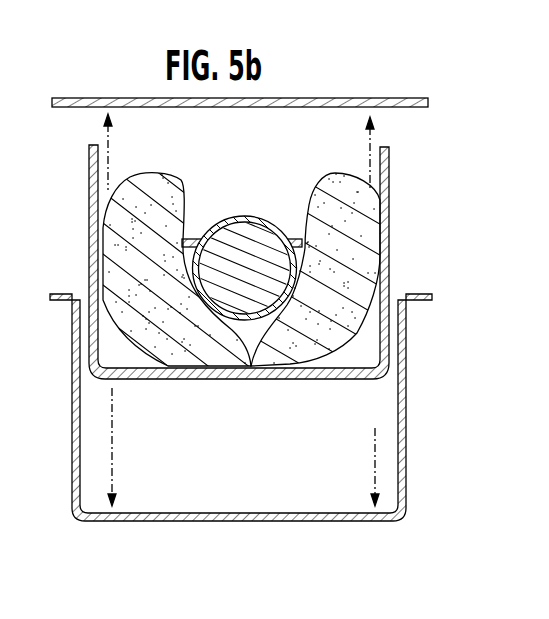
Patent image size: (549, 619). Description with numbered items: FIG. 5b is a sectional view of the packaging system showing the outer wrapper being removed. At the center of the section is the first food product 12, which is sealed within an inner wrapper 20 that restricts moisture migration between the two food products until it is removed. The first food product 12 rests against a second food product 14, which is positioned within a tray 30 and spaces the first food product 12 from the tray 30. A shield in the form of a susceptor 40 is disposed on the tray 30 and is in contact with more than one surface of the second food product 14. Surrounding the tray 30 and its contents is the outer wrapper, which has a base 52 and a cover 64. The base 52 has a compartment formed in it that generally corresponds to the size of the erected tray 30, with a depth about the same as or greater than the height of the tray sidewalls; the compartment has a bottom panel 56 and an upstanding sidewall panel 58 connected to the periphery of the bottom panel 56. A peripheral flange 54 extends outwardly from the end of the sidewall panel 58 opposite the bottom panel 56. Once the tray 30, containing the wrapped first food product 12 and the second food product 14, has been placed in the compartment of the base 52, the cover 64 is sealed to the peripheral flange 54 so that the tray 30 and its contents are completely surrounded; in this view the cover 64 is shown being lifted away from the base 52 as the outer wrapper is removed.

The first food product 12 is at (274, 230).
The second food product 14 is at (335, 173).
The inner wrapper 20 is at (262, 216).
The tray 30 is at (88, 193).
The susceptor 40 is at (106, 212).
The base 52 is at (195, 522).
The peripheral flange 54 is at (62, 300).
The bottom panel 56 is at (134, 521).
The sidewall panel 58 is at (73, 480).
The cover 64 is at (58, 98).